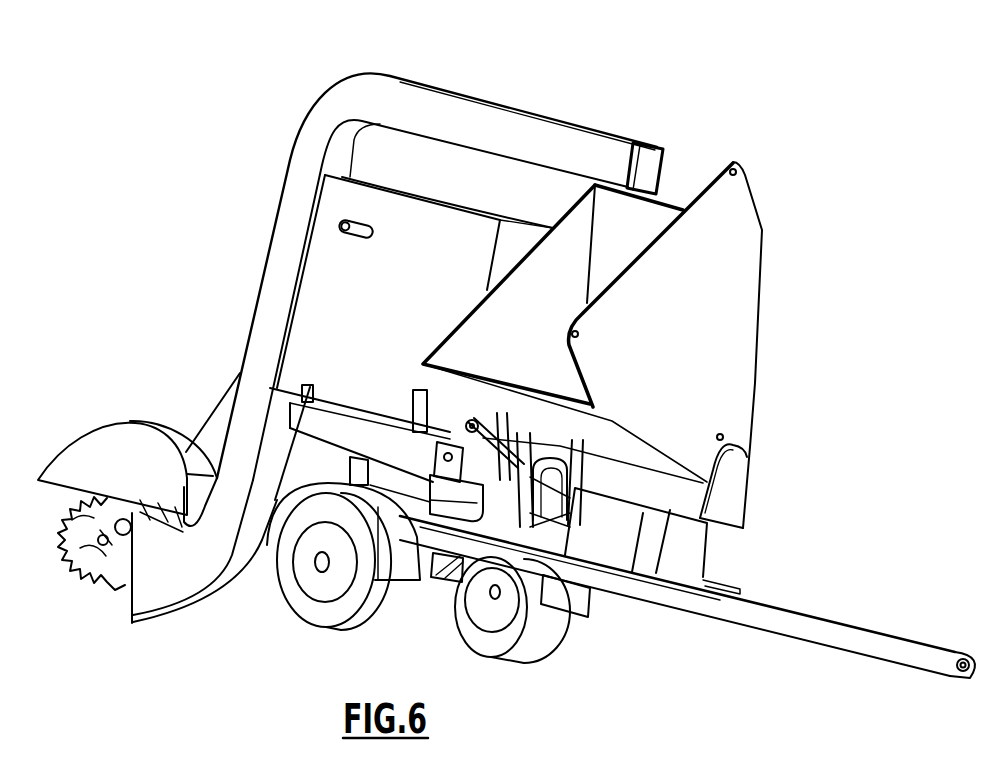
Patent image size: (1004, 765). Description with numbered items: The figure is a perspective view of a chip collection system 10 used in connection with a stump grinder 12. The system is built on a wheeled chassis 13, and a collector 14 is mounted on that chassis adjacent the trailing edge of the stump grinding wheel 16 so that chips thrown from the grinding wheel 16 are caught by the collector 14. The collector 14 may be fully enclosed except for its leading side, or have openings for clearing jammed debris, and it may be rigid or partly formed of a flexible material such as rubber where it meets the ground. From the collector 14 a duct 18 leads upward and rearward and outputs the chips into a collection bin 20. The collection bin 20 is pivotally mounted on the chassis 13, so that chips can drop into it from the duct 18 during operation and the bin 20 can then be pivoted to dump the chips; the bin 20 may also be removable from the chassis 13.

The chip collection system 10 is at (211, 322).
The stump grinder 12 is at (397, 337).
The wheeled chassis 13 is at (630, 585).
The collector 14 is at (173, 580).
The stump grinding wheel 16 is at (97, 568).
The duct 18 is at (338, 90).
The collection bin 20 is at (732, 257).